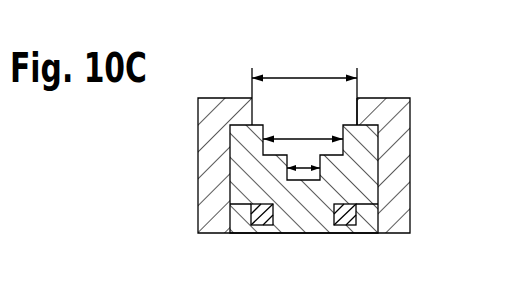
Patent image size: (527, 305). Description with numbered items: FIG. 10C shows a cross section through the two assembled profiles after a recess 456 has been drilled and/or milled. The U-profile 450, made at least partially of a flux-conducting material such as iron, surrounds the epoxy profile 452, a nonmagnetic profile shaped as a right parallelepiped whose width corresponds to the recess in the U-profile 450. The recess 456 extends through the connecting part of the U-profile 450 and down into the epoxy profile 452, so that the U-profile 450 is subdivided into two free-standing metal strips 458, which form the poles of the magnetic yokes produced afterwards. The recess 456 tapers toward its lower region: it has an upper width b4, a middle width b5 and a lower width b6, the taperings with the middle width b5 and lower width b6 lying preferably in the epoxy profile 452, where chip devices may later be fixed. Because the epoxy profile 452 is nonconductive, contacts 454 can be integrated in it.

The U-profile 450 is at (393, 112).
The epoxy profile 452 is at (370, 218).
The contacts 454 is at (343, 225).
The recess 456 is at (325, 125).
The free-standing metal strips 458 is at (210, 162).
The upper width b4 is at (303, 76).
The middle width b5 is at (297, 142).
The lower width b6 is at (297, 174).